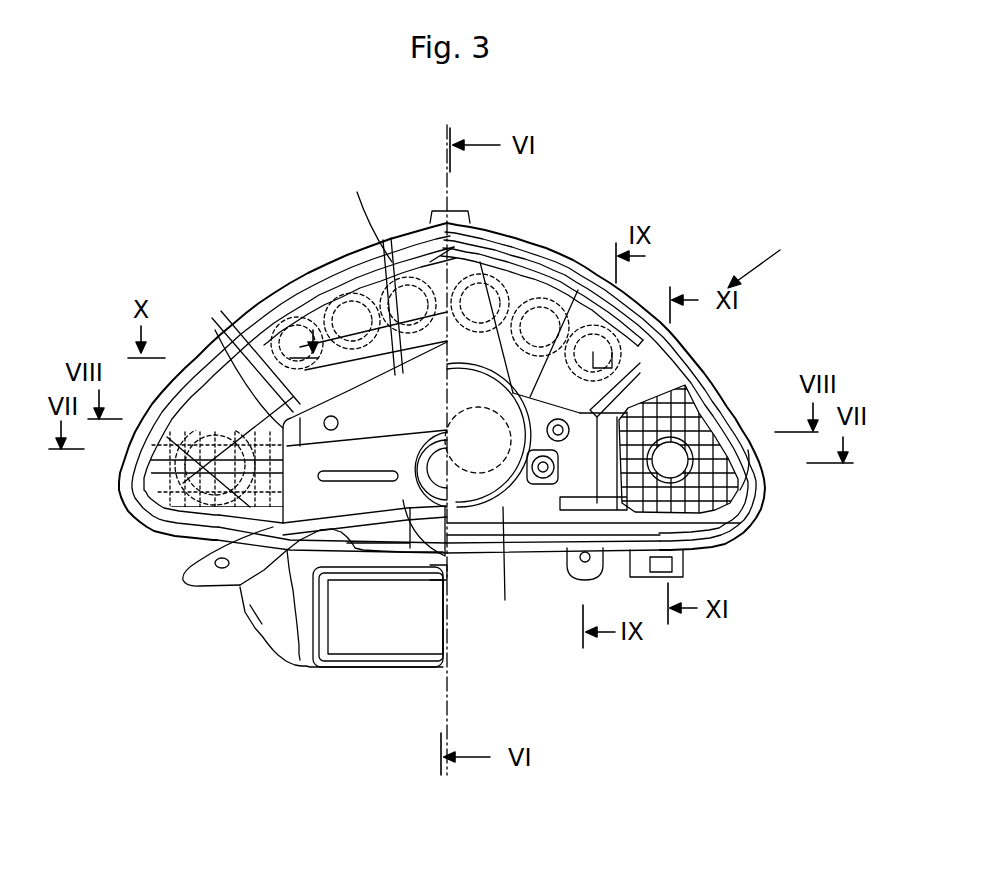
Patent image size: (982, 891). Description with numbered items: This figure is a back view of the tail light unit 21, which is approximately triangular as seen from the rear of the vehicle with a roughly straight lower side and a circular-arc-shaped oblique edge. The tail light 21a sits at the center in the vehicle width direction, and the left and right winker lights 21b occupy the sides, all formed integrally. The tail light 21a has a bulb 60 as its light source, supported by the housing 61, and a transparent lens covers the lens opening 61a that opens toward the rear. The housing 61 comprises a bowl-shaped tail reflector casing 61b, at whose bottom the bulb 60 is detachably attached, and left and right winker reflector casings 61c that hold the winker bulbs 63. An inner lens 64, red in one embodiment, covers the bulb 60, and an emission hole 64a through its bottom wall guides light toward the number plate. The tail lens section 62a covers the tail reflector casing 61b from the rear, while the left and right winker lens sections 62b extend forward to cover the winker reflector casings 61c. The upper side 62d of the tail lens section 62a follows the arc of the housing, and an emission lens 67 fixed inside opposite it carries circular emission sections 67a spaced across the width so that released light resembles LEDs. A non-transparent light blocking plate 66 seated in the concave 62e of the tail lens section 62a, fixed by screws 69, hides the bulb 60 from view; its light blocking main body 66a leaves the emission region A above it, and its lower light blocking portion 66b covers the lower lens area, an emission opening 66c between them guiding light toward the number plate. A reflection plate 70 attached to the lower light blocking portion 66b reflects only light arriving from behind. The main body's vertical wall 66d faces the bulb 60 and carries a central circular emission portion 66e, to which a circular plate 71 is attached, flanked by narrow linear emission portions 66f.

The housing 61 is at (368, 263).
The emission region A is at (367, 212).
The tail lens section 62a is at (428, 280).
The lens opening 61a is at (480, 240).
The emission sections 67a is at (513, 290).
The tail reflector casing 61b is at (548, 286).
The emission lens 67 is at (642, 326).
The tail light unit 21 is at (768, 256).
The light blocking main body 66a is at (215, 330).
The upper side 62d is at (249, 367).
The winker reflector casings 61c is at (183, 368).
The winker bulbs 63 is at (170, 393).
The emission portion 66e is at (424, 432).
The screws 69 is at (339, 423).
The circular plate 71 is at (465, 455).
The concave 62e is at (317, 465).
The emission portions 66f is at (358, 478).
The winker lens sections 62b is at (118, 493).
The winker lights 21b is at (181, 576).
The emission opening 66c is at (253, 610).
The light blocking plate 66 is at (269, 651).
The lower light blocking portion 66b is at (300, 645).
The reflection plate 70 is at (375, 640).
The vertical wall 66d is at (447, 556).
The bulb 60 is at (512, 507).
The inner lens 64 is at (534, 507).
The tail light 21a is at (486, 507).
The emission hole 64a is at (505, 600).